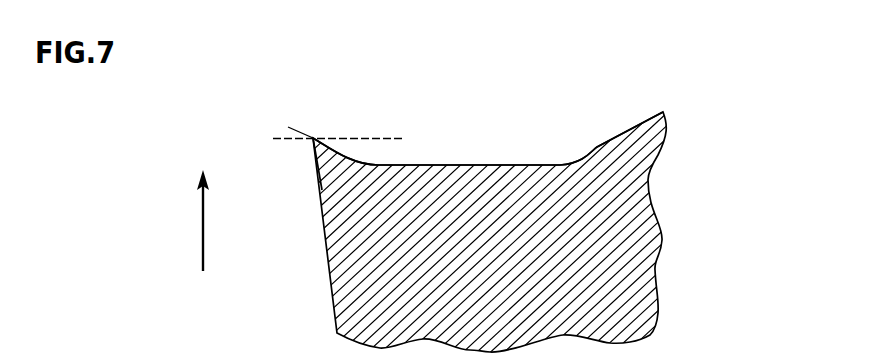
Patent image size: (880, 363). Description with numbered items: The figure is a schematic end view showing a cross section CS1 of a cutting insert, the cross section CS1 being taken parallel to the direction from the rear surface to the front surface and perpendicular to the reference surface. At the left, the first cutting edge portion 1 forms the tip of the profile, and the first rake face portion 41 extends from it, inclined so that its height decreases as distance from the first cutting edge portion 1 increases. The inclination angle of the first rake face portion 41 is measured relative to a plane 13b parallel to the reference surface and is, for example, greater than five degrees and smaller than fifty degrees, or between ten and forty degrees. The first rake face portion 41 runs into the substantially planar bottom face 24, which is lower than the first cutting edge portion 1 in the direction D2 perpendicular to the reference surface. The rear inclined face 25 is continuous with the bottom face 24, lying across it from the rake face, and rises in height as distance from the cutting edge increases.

The first cutting edge portion 1 is at (312, 137).
The first rake face portion 41 is at (364, 163).
The bottom face 24 is at (473, 164).
The rear inclined face 25 is at (601, 150).
The plane parallel to reference surface 13b is at (286, 142).
The cross section CS1 is at (697, 107).
The direction perpendicular to reference surface D2 is at (205, 230).